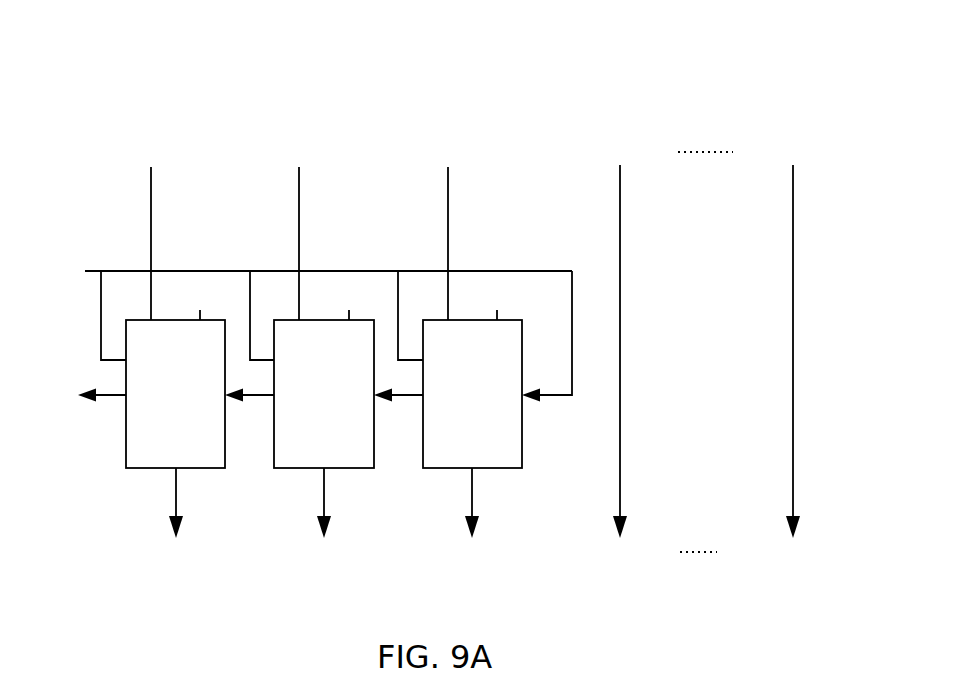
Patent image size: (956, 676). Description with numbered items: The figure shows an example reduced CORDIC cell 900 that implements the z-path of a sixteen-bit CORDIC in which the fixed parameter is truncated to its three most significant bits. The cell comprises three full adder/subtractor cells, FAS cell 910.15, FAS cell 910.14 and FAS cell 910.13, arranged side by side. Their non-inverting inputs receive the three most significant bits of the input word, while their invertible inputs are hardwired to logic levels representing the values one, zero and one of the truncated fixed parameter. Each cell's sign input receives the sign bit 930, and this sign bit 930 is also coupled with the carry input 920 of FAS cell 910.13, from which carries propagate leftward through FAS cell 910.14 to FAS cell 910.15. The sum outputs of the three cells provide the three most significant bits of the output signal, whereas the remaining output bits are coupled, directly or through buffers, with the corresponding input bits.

The reduced CORDIC cell 900 is at (117, 93).
The sign bit σ(i) 930 is at (46, 292).
The carry input 920 is at (538, 400).
The FAS cell 910.15 is at (213, 432).
The FAS cell 910.14 is at (361, 432).
The FAS cell 910.13 is at (510, 432).